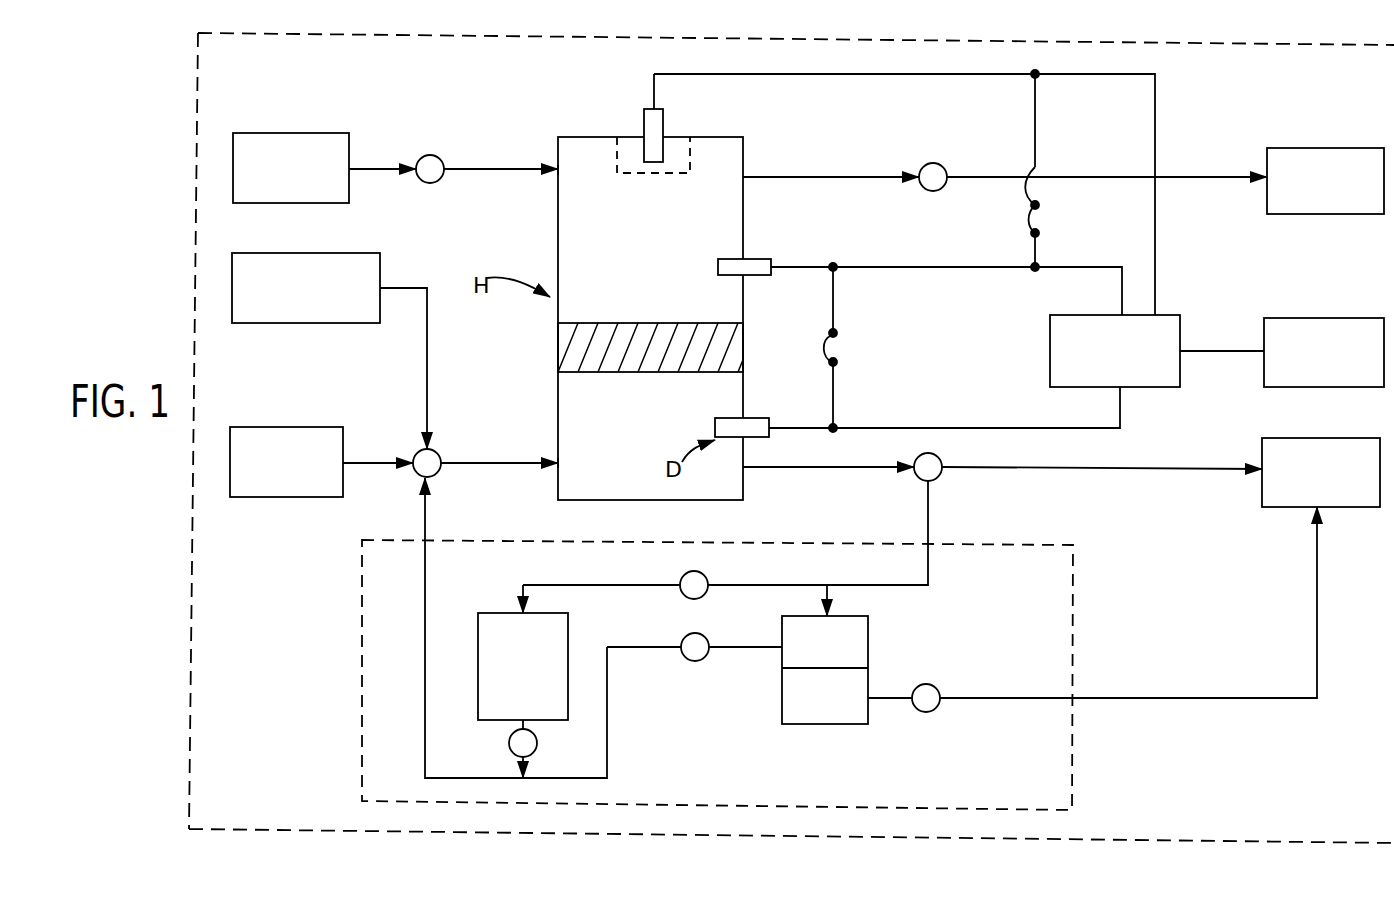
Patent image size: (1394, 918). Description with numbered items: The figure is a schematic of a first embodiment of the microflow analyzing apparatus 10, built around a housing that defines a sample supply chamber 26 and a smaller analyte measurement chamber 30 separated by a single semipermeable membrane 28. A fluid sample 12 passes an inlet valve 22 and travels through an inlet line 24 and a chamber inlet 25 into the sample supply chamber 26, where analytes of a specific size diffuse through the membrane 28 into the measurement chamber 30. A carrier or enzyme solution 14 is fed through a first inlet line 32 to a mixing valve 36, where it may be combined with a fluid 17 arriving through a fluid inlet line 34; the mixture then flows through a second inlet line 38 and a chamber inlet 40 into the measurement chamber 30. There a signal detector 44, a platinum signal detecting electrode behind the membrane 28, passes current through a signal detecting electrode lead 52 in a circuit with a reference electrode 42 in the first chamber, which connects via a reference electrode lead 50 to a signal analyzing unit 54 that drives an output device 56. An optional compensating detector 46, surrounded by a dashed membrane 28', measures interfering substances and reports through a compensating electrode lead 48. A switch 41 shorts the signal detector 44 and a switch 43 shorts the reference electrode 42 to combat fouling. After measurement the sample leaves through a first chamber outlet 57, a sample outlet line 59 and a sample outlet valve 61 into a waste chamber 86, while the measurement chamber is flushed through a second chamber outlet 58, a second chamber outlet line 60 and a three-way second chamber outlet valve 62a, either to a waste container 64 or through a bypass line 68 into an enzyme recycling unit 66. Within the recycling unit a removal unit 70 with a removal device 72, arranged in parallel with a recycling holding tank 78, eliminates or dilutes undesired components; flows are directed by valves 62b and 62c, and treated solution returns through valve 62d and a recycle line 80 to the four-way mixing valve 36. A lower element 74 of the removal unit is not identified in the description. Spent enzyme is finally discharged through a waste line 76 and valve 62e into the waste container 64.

The microflow analyzing apparatus 10 is at (937, 848).
The fluid sample 12 is at (302, 133).
The carrier or enzyme solution 14 is at (315, 253).
The fluid 17 is at (257, 497).
The inlet valve 22 is at (436, 155).
The inlet line 24 is at (480, 167).
The chamber inlet 25 is at (553, 178).
The sample supply chamber 26 is at (592, 257).
The semipermeable membrane 28 is at (618, 343).
The membrane 28' is at (628, 135).
The analyte measurement chamber 30 is at (578, 406).
The first inlet line 32 is at (402, 287).
The fluid inlet line 34 is at (363, 465).
The mixing valve 36 is at (415, 452).
The second inlet line 38 is at (473, 460).
The chamber inlet 40 is at (553, 460).
The switch 41 is at (842, 356).
The reference electrode 42 is at (752, 276).
The switch 43 is at (1030, 219).
The signal detector 44 is at (760, 418).
The compensating detector 46 is at (664, 125).
The compensating electrode lead 48 is at (1015, 73).
The reference electrode lead 50 is at (917, 268).
The signal detecting electrode lead 52 is at (900, 428).
The signal analyzing unit 54 is at (1133, 388).
The output device 56 is at (1290, 387).
The first chamber outlet 57 is at (742, 185).
The second chamber outlet 58 is at (745, 463).
The sample outlet line 59 is at (897, 173).
The second chamber outlet line 60 is at (820, 470).
The sample outlet valve 61 is at (936, 170).
The second chamber outlet valve 62a is at (943, 463).
The valve 62b is at (698, 580).
The valve 62c is at (508, 746).
The valve 62d is at (690, 662).
The valve 62e is at (933, 710).
The waste container 64 is at (1370, 508).
The enzyme recycling unit 66 is at (362, 758).
The bypass line 68 is at (927, 573).
The removal unit 70 is at (857, 640).
The removal device 72 is at (868, 668).
The lower reservoir compartment 74 is at (813, 725).
The waste line 76 is at (987, 700).
The recycling holding tank 78 is at (566, 693).
The recycle line 80 is at (548, 778).
The waste chamber 86 is at (1300, 148).